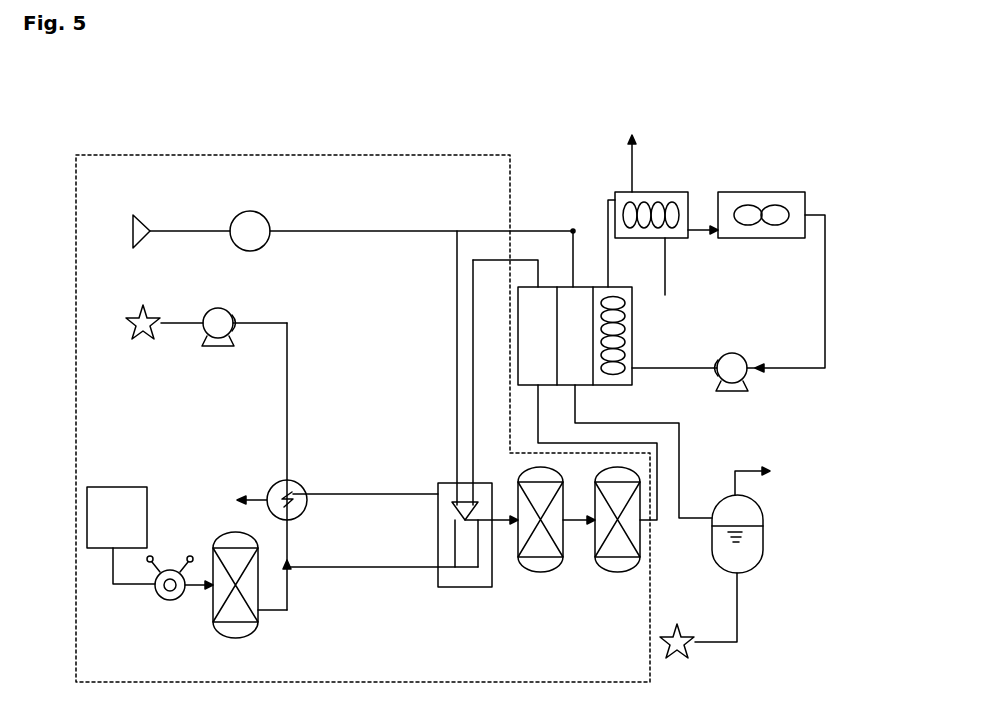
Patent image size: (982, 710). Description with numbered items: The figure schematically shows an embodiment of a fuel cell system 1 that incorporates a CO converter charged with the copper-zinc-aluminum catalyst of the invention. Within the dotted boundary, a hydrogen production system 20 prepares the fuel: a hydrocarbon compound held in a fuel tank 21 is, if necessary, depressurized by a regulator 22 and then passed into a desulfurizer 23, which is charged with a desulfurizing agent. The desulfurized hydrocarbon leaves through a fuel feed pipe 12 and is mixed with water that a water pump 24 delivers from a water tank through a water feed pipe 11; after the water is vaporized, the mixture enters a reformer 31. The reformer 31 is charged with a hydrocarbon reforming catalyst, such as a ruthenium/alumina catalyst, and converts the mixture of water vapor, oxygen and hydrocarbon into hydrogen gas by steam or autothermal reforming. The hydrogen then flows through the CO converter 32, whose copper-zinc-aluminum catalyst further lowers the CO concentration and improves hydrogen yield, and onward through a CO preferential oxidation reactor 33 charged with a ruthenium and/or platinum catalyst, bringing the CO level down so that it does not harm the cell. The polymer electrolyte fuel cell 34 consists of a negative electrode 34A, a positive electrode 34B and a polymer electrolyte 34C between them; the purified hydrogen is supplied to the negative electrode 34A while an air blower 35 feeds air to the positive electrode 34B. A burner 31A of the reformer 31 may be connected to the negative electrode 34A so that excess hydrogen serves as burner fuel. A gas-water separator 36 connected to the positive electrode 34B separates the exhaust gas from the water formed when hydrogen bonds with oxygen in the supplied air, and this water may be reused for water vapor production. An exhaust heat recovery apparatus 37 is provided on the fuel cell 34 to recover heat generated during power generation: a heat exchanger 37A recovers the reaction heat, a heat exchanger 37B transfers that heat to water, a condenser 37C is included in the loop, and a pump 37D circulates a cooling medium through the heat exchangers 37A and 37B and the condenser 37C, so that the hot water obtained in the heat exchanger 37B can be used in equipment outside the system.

The fuel cell system 1 is at (561, 142).
The water feed pipe 11 is at (288, 405).
The fuel feed pipe 12 is at (270, 612).
The hydrogen production system 20 is at (118, 155).
The fuel tank 21 is at (120, 487).
The regulator 22 is at (172, 567).
The desulfurizer 23 is at (215, 606).
The water pump 24 is at (228, 310).
The reformer 31 is at (449, 547).
The burner 31A is at (456, 500).
The CO converter 32 is at (545, 575).
The CO preferential oxidation reactor 33 is at (615, 575).
The fuel cell 34 is at (517, 345).
The negative electrode 34A is at (545, 297).
The positive electrode 34B is at (588, 380).
The polymer electrolyte 34C is at (548, 374).
The air blower 35 is at (258, 213).
The gas-water separator 36 is at (762, 565).
The exhaust heat recovery apparatus 37 is at (834, 291).
The heat exchanger 37A is at (636, 355).
The heat exchanger 37B is at (661, 191).
The condenser 37C is at (770, 191).
The pump 37D is at (742, 353).